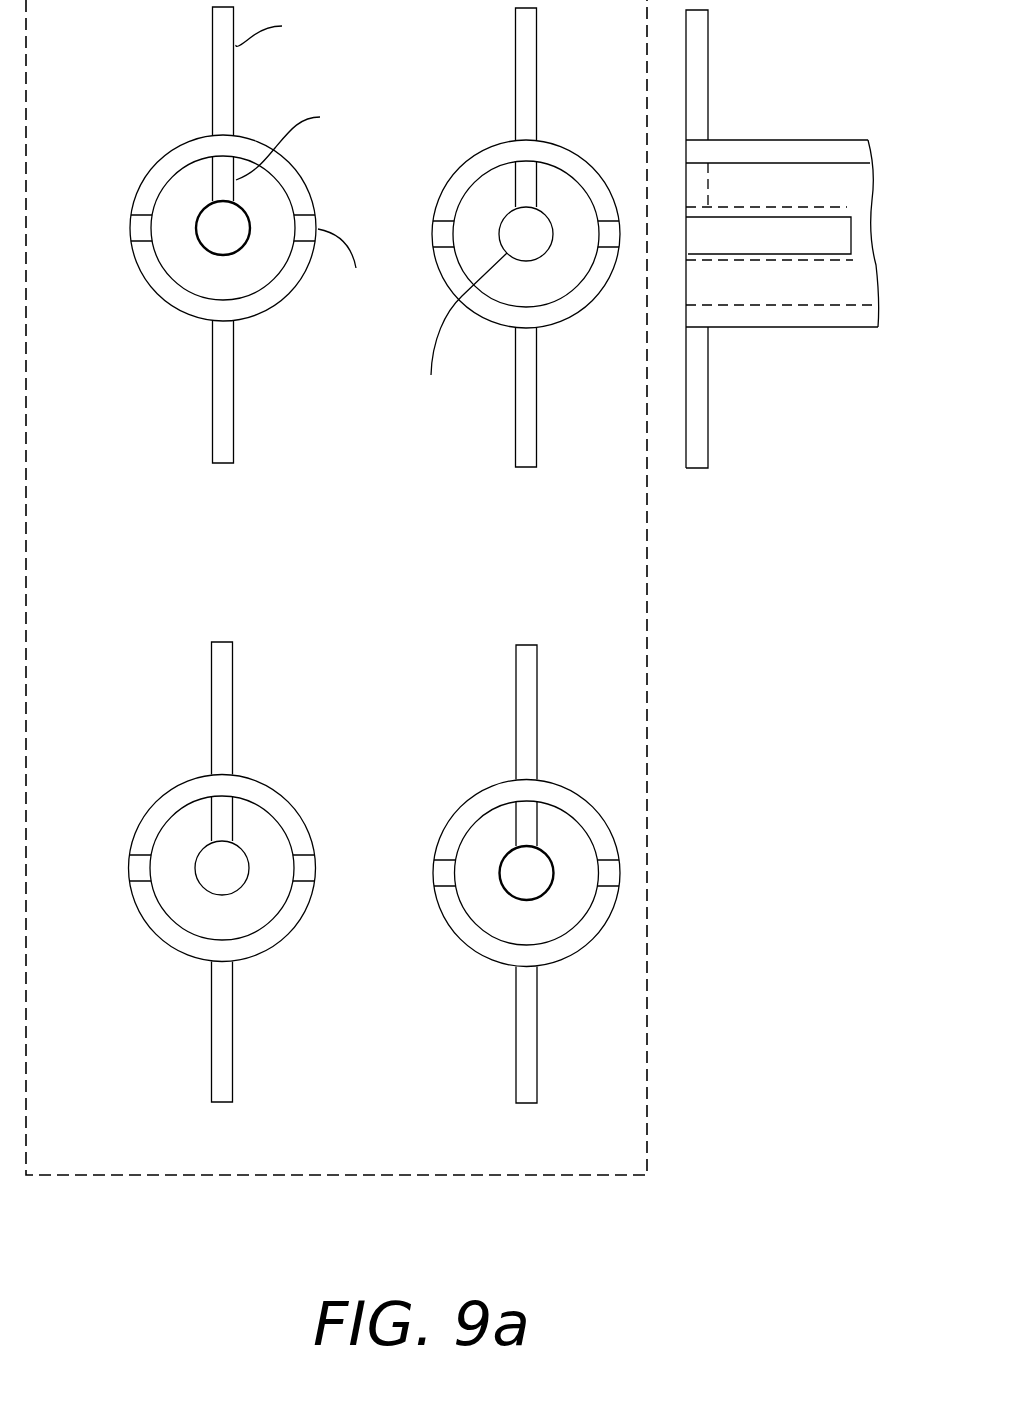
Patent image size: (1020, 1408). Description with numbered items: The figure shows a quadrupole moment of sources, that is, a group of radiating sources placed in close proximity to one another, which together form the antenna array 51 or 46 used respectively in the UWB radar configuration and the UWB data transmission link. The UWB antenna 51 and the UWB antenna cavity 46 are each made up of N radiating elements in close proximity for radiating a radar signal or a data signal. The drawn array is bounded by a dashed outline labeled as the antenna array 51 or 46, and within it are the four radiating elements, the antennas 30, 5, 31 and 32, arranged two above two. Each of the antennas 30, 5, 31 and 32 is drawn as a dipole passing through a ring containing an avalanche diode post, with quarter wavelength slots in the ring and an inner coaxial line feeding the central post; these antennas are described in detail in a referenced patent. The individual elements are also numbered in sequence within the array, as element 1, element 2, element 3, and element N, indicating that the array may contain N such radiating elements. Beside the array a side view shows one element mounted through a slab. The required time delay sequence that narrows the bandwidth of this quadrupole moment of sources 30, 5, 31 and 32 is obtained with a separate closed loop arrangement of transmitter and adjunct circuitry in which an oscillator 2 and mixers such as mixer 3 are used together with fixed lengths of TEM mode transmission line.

The antenna 30 is at (279, 238).
The antenna 31 is at (222, 872).
The antenna 32 is at (558, 780).
The antenna 5 is at (511, 240).
The UWB antenna 51 is at (418, 587).
The UWB antenna cavity 46 is at (647, 637).
The element 1 is at (267, 93).
The oscillator 2 is at (576, 123).
The mixer 3 is at (276, 748).